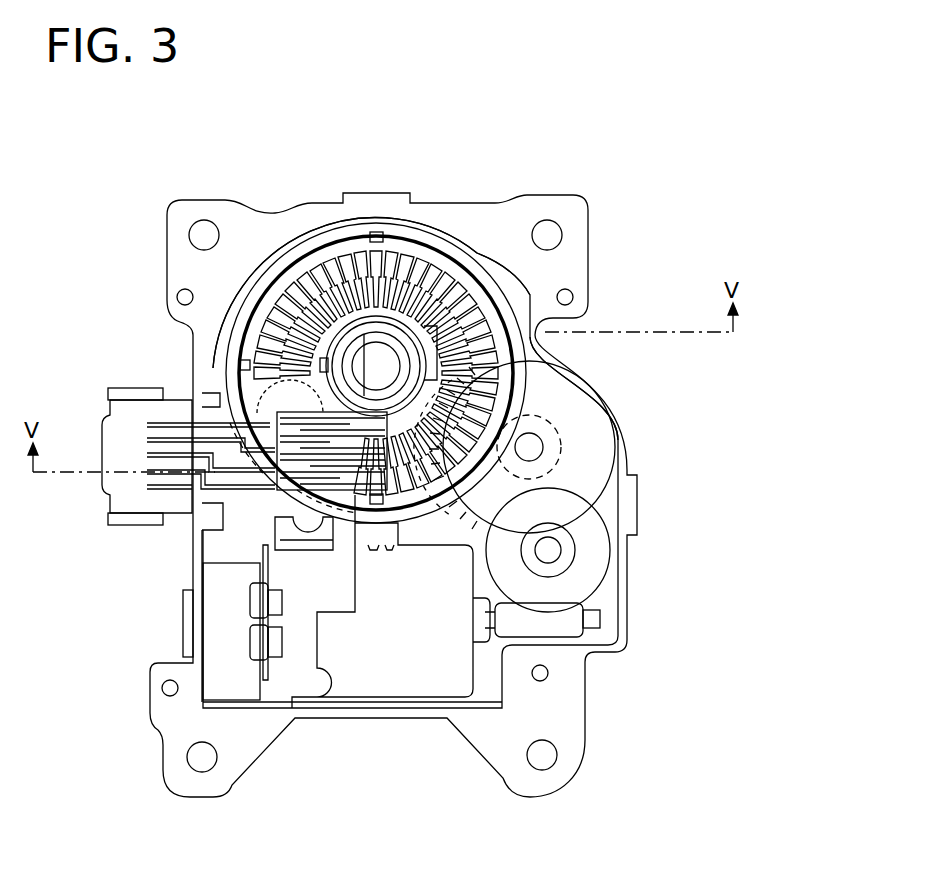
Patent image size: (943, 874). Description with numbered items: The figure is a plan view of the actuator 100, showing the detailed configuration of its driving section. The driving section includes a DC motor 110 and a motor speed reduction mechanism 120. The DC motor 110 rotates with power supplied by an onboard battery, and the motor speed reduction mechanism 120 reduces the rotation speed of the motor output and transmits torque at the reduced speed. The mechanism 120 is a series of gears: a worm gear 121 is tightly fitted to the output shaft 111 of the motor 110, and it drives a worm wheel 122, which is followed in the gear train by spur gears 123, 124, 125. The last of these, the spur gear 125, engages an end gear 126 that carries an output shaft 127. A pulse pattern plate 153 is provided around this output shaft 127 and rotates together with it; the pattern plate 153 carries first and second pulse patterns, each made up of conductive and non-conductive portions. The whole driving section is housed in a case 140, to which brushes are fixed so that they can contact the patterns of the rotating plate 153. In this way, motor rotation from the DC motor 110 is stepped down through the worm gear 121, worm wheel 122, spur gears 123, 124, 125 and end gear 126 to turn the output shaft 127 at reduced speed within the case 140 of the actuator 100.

The actuator 100 is at (600, 252).
The DC motor 110 is at (378, 687).
The output shaft 111 is at (602, 617).
The motor speed reduction mechanism 120 is at (603, 507).
The worm gear 121 is at (568, 628).
The worm wheel 122 is at (590, 572).
The spur gear 123 is at (568, 550).
The spur gear 124 is at (585, 430).
The spur gear 125 is at (628, 404).
The end gear 126 is at (508, 320).
The output shaft 127 is at (380, 360).
The case 140 is at (192, 362).
The pulse pattern plate 153 is at (254, 299).